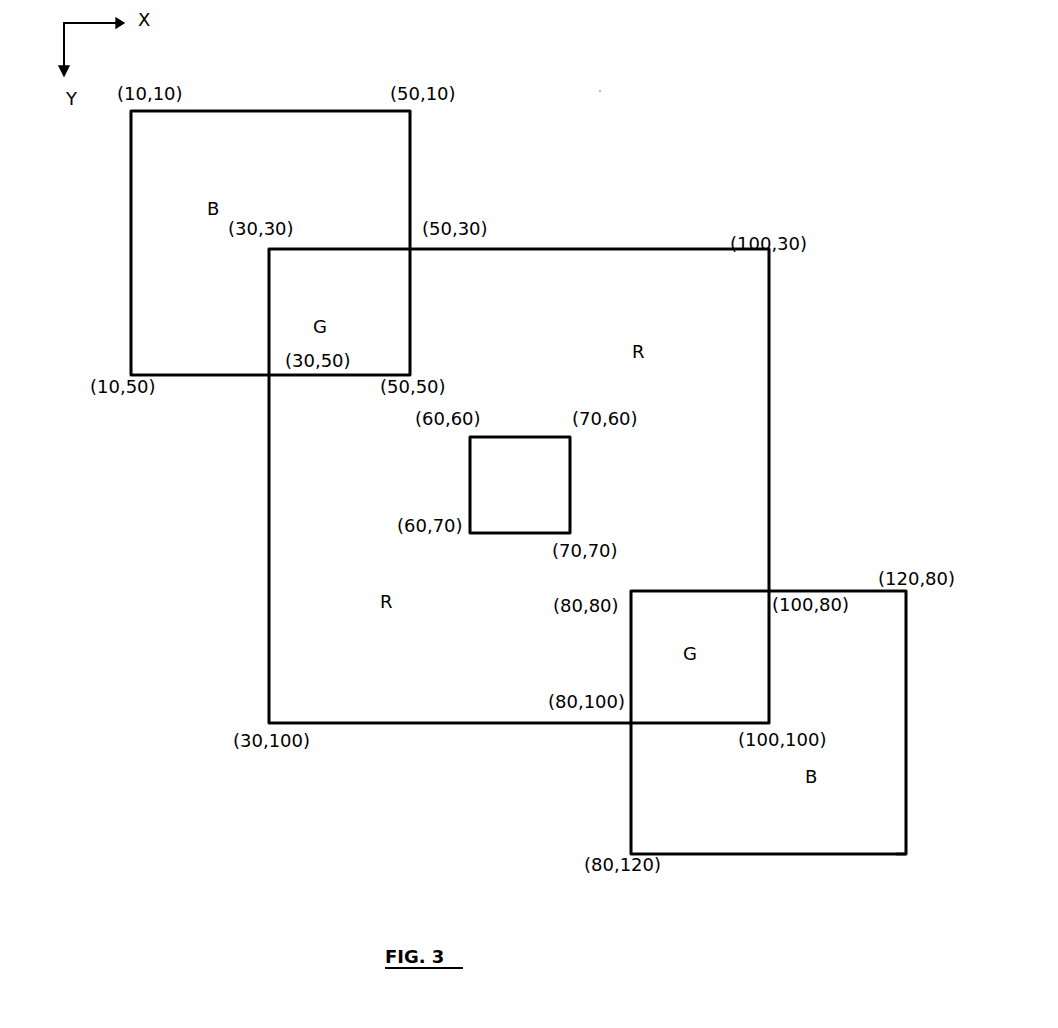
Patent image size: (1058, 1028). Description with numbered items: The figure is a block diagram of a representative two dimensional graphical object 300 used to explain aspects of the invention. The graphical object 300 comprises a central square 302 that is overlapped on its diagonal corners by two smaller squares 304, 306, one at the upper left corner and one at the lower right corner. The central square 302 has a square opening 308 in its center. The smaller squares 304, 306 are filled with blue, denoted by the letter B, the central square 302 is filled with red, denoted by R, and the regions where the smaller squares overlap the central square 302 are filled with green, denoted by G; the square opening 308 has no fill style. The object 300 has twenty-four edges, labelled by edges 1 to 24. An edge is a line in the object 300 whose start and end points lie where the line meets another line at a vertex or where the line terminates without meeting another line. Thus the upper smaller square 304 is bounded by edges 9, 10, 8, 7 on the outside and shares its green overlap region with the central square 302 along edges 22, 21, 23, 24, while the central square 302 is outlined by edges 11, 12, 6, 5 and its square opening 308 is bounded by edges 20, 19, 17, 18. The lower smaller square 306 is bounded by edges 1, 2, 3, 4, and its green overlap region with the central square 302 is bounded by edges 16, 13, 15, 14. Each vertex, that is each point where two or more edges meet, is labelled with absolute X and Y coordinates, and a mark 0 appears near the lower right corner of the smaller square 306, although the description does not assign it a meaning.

The graphical object 300 is at (580, 110).
The central square 302 is at (658, 319).
The smaller square 304 is at (353, 156).
The smaller square 306 is at (862, 808).
The square opening 308 is at (540, 496).
The corner vertex 0 is at (903, 864).
The edge 1 is at (840, 590).
The edge 2 is at (908, 650).
The edge 3 is at (803, 855).
The edge 4 is at (630, 809).
The edge 5 is at (457, 723).
The edge 6 is at (268, 540).
The edge 7 is at (214, 377).
The edge 8 is at (131, 302).
The edge 9 is at (269, 111).
The edge 10 is at (410, 132).
The edge 11 is at (592, 249).
The edge 12 is at (769, 377).
The edge 13 is at (770, 622).
The edge 14 is at (728, 727).
The edge 15 is at (630, 692).
The edge 16 is at (720, 590).
The edge 17 is at (570, 512).
The edge 18 is at (537, 537).
The edge 19 is at (470, 477).
The edge 20 is at (550, 437).
The edge 21 is at (268, 333).
The edge 22 is at (362, 249).
The edge 23 is at (410, 348).
The edge 24 is at (358, 377).